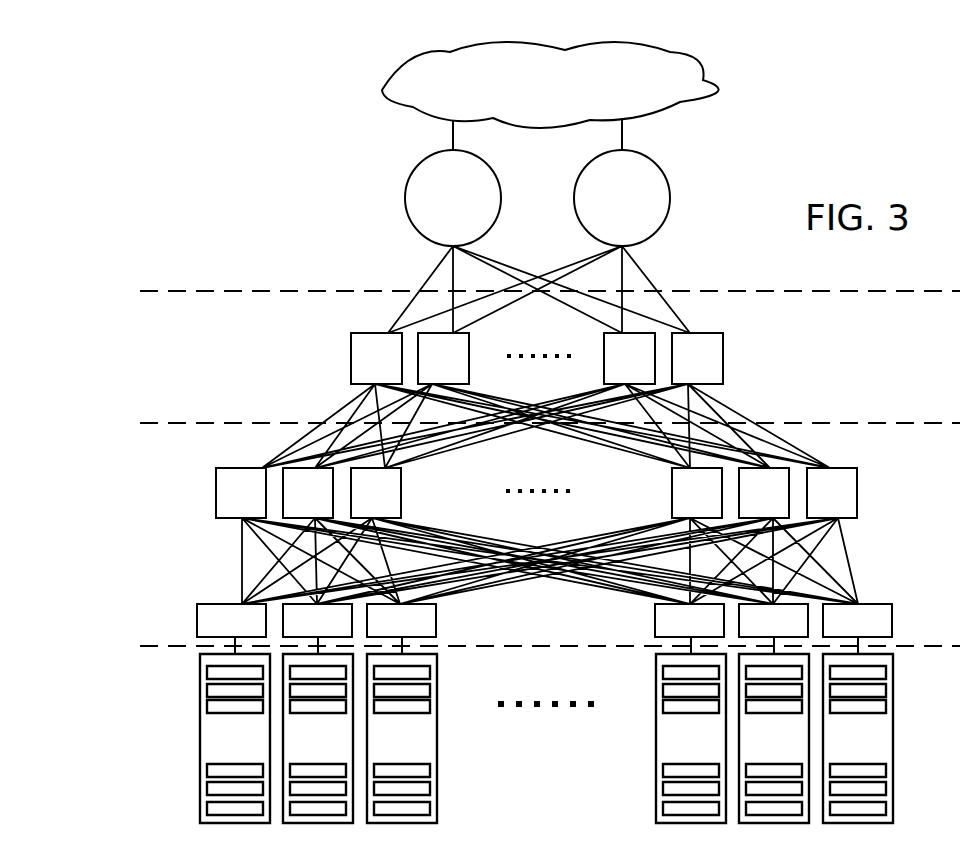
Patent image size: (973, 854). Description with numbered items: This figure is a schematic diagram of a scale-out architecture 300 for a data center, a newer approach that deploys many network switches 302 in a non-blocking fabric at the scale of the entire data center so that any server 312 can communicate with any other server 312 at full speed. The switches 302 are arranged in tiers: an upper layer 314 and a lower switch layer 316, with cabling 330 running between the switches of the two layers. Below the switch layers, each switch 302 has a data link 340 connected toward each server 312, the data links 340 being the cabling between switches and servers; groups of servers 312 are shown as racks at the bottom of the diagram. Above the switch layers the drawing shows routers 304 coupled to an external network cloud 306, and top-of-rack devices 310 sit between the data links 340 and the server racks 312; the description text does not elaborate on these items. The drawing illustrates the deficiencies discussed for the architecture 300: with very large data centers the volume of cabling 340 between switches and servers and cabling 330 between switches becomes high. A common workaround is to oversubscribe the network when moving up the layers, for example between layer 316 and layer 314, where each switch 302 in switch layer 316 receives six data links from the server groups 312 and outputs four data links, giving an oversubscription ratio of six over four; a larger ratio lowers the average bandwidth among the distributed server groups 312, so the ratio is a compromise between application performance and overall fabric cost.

The scale-out architecture 300 is at (110, 137).
The network switches 302 is at (713, 352).
The routers 304 is at (657, 198).
The external network cloud 306 is at (698, 92).
The top-of-rack switches 310 is at (888, 618).
The servers 312 is at (893, 738).
The layer 314 is at (168, 348).
The switch layer 316 is at (168, 496).
The cabling between switches 330 is at (802, 450).
The data link 340 is at (848, 533).